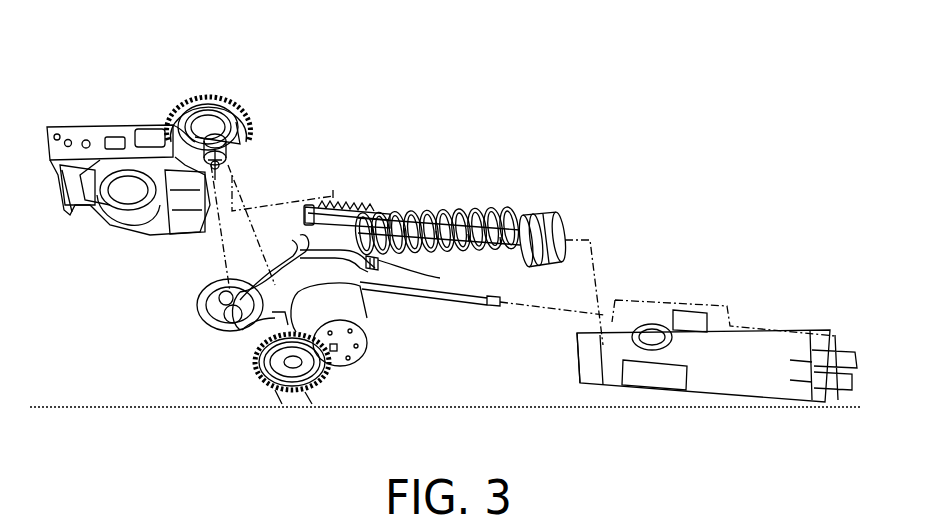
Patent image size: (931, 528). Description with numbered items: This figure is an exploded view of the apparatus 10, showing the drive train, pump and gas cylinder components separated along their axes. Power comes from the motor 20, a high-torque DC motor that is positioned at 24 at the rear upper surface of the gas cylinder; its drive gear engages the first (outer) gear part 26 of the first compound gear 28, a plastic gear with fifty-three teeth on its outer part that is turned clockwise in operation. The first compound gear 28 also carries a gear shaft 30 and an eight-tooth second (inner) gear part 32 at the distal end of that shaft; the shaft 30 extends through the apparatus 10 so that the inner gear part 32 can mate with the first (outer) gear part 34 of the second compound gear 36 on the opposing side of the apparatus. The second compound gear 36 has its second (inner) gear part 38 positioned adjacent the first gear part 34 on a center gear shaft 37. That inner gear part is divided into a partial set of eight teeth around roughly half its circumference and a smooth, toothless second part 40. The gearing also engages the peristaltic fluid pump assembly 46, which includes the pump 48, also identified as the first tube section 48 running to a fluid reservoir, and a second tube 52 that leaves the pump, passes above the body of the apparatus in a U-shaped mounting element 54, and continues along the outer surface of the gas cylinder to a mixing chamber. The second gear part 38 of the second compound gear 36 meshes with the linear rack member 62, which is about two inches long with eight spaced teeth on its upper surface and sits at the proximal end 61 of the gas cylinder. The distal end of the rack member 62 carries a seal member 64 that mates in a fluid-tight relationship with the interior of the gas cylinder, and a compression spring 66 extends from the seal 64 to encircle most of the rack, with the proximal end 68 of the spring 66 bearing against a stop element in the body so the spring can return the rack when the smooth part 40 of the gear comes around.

The apparatus 10 is at (650, 108).
The motor 20 is at (360, 308).
The motor position 24 is at (663, 327).
The first (outer) gear part 26 is at (303, 383).
The first compound gear 28 is at (268, 408).
The gear shaft 30 is at (260, 353).
The second (inner) gear part 32 is at (242, 330).
The first (outer) gear part 34 is at (258, 107).
The second compound gear 36 is at (190, 74).
The center gear shaft 37 is at (233, 152).
The second (inner) gear part 38 is at (228, 141).
The second part 40 is at (205, 125).
The peristaltic fluid pump assembly 46 is at (212, 318).
The pump / first tube section 48 is at (230, 267).
The second tube 52 is at (470, 303).
The U-shaped mounting element 54 is at (190, 140).
The proximal end 61 is at (605, 362).
The linear rack member 62 is at (345, 203).
The seal member 64 is at (556, 212).
The compression spring 66 is at (453, 207).
The proximal end of spring 68 is at (358, 205).